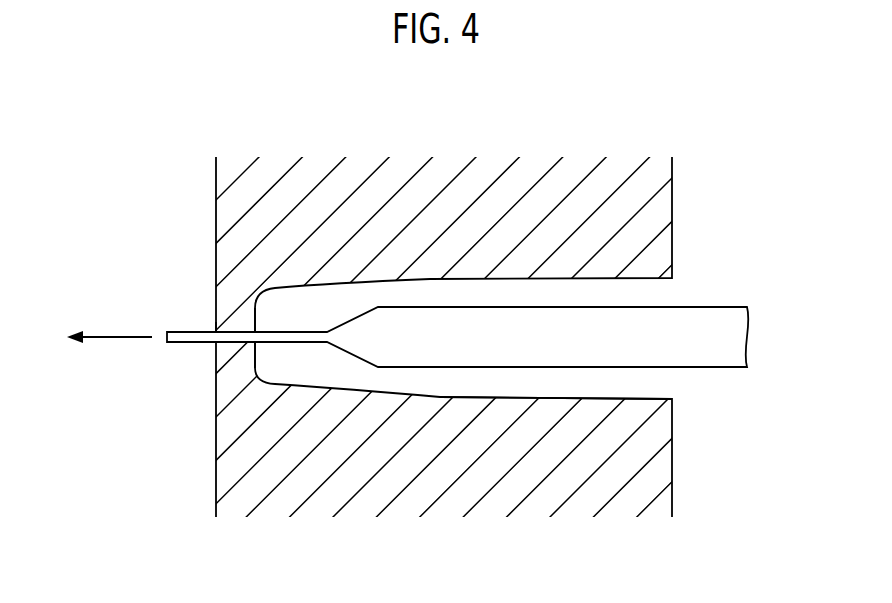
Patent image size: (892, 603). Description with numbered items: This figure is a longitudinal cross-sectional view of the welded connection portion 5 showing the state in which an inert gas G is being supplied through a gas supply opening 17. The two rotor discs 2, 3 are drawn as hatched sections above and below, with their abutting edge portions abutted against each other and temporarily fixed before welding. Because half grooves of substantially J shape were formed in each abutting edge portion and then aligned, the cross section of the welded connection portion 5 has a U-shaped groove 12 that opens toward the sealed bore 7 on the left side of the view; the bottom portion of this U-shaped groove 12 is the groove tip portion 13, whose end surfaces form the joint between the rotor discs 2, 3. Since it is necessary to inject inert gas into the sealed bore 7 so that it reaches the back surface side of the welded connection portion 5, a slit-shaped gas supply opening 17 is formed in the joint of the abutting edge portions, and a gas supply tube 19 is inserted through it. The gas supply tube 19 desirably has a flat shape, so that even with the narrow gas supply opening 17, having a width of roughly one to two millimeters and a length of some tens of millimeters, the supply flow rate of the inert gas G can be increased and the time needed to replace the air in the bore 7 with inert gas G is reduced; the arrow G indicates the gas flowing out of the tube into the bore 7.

The rotor disc 2 is at (202, 214).
The rotor disc 3 is at (202, 456).
The welded connection portion 5 is at (708, 292).
The bore 7 is at (115, 282).
The U-shaped groove 12 is at (668, 399).
The groove tip portion 13 is at (255, 358).
The gas supply opening 17 is at (216, 330).
The gas supply tube 19 is at (190, 343).
The inert gas G is at (113, 339).